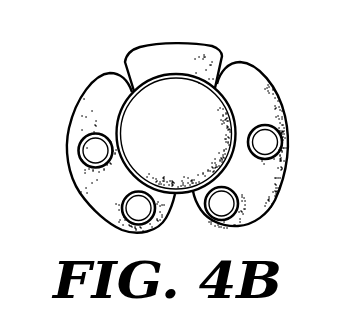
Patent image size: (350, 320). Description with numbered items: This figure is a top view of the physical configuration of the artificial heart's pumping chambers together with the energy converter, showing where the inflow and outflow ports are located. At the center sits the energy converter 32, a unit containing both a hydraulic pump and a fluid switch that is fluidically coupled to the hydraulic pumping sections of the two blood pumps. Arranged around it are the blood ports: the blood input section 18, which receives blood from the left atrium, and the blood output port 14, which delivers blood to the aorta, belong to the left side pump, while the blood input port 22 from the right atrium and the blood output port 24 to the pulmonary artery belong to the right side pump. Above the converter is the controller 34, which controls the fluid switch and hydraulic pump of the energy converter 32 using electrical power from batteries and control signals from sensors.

The blood output port 14 is at (267, 141).
The blood input section 18 is at (249, 206).
The blood input port 22 is at (113, 218).
The blood output port 24 is at (84, 152).
The energy converter 32 is at (190, 136).
The controller 34 is at (187, 52).